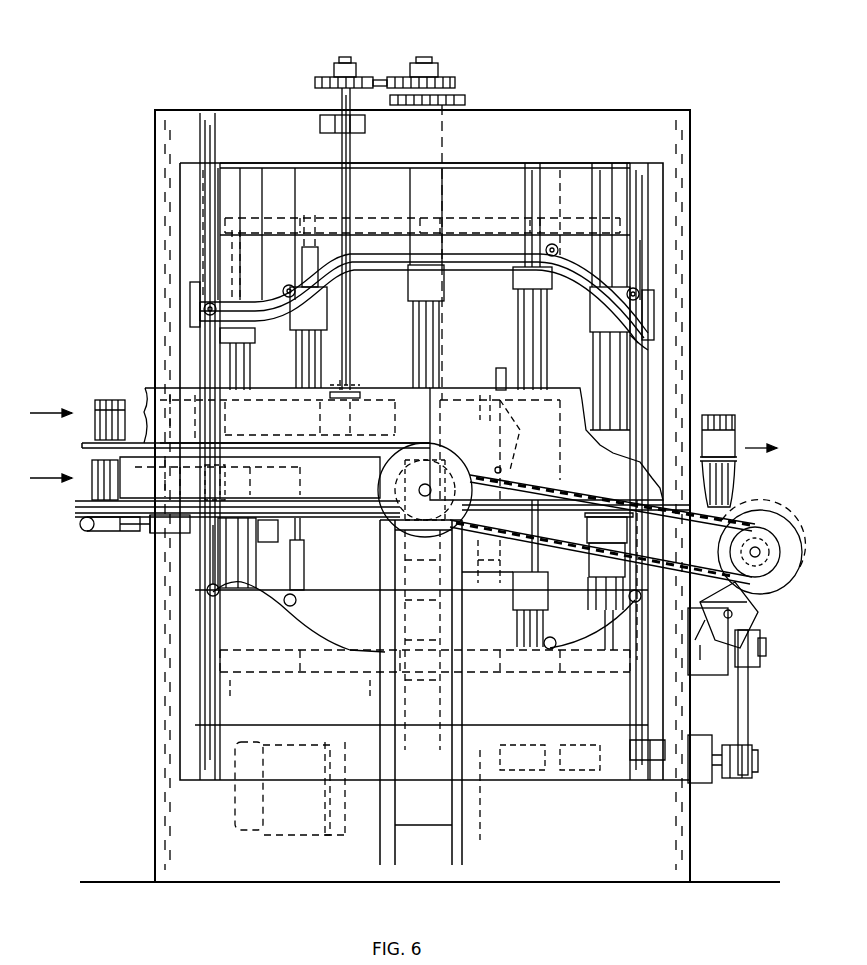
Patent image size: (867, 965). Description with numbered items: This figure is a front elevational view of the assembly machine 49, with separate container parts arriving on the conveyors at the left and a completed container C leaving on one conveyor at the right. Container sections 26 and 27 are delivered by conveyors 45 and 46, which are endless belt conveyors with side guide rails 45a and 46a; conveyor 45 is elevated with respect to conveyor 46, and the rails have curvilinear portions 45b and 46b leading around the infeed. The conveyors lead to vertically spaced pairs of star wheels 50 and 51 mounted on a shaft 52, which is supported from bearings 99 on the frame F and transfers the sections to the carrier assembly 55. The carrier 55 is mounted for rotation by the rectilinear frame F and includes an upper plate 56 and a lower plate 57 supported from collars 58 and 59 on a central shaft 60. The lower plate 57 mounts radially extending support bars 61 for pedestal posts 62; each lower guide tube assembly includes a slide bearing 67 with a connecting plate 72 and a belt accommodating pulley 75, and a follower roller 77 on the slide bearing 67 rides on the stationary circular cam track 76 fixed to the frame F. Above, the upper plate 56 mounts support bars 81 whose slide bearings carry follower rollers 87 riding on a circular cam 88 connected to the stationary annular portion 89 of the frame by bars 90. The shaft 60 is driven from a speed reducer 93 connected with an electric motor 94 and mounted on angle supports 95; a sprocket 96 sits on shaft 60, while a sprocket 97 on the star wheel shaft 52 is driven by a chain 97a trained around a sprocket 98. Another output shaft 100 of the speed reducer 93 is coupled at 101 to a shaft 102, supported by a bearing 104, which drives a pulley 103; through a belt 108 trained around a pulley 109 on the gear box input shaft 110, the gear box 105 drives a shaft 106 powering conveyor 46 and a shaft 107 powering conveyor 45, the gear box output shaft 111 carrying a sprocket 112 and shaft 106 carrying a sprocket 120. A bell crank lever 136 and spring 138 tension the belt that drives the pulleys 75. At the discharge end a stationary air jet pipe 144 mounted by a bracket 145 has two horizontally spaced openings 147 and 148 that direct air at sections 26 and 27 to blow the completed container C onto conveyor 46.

The frame F is at (160, 872).
The container section 26 is at (112, 400).
The container section 27 is at (72, 520).
The conveyor line 45 is at (82, 446).
The side guide rail 45a is at (140, 385).
The curvilinear portion 45b is at (392, 388).
The conveyor line 46 is at (75, 510).
The side guide rail 46a is at (160, 495).
The curvilinear portion 46b is at (438, 455).
The assembly machine 49 is at (705, 360).
The star wheels 50 is at (364, 392).
The star wheels 51 is at (268, 470).
The star wheel shaft 52 is at (352, 320).
The carrier assembly 55 is at (590, 220).
The upper plate 56 is at (540, 222).
The lower plate 57 is at (555, 670).
The collar 58 is at (452, 215).
The collar 59 is at (452, 640).
The central shaft 60 is at (442, 130).
The support bar 61 is at (255, 680).
The pedestal post 62 is at (240, 618).
The slide bearing 67 is at (248, 580).
The connecting plate 72 is at (292, 590).
The pulley 75 is at (295, 530).
The cam track 76 is at (195, 685).
The follower roller 77 is at (210, 585).
The support bar 81 is at (640, 225).
The follower roller 87 is at (440, 265).
The circular cam 88 is at (650, 345).
The stationary annular portion 89 is at (660, 252).
The bars 90 is at (190, 300).
The speed reducer 93 is at (490, 825).
The electric motor 94 is at (282, 835).
The angle supports 95 is at (492, 840).
The sprocket 96 is at (466, 93).
The sprocket 97 is at (335, 70).
The chain 97a is at (380, 78).
The sprocket 98 is at (401, 76).
The bearings 99 is at (320, 120).
The output shaft 100 is at (555, 775).
The coupling 101 is at (590, 775).
The shaft 102 is at (645, 780).
The pulley 103 is at (760, 778).
The bearing 104 is at (712, 780).
The gear box 105 is at (722, 670).
The shaft 106 is at (775, 520).
The shaft 107 is at (440, 470).
The belt 108 is at (750, 700).
The pulley 109 is at (765, 640).
The gear box input shaft 110 is at (770, 641).
The gear box output shaft 111 is at (712, 646).
The sprocket 112 is at (735, 615).
The sprocket 120 is at (760, 512).
The bell crank lever 136 is at (120, 533).
The spring 138 is at (88, 530).
The air jet pipe 144 is at (515, 435).
The bracket 145 is at (484, 572).
The opening 147 is at (485, 405).
The opening 148 is at (502, 470).
The completed container C is at (743, 438).